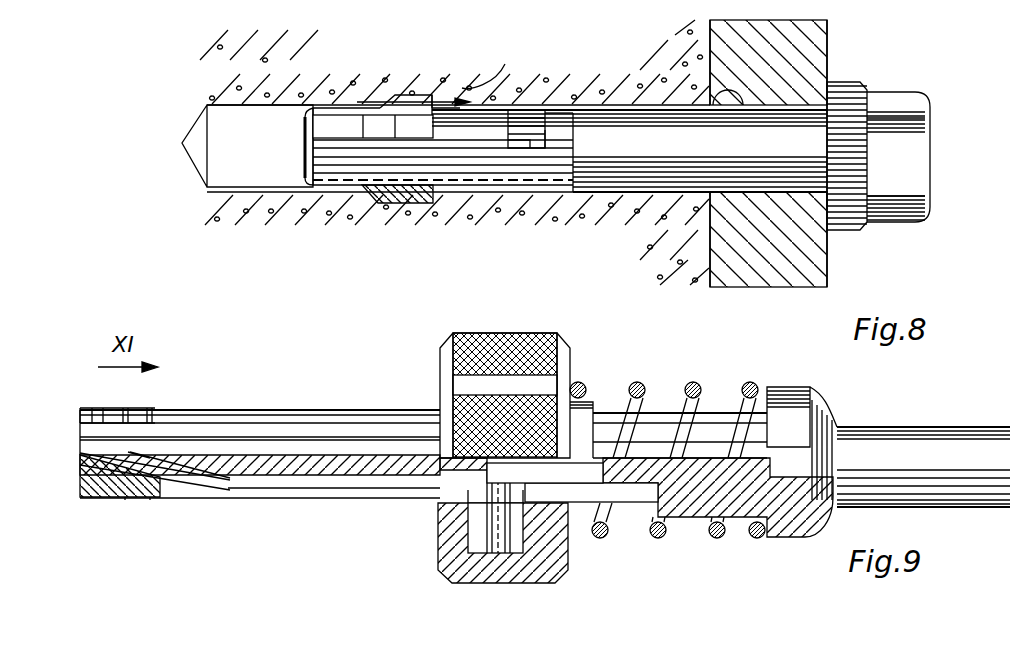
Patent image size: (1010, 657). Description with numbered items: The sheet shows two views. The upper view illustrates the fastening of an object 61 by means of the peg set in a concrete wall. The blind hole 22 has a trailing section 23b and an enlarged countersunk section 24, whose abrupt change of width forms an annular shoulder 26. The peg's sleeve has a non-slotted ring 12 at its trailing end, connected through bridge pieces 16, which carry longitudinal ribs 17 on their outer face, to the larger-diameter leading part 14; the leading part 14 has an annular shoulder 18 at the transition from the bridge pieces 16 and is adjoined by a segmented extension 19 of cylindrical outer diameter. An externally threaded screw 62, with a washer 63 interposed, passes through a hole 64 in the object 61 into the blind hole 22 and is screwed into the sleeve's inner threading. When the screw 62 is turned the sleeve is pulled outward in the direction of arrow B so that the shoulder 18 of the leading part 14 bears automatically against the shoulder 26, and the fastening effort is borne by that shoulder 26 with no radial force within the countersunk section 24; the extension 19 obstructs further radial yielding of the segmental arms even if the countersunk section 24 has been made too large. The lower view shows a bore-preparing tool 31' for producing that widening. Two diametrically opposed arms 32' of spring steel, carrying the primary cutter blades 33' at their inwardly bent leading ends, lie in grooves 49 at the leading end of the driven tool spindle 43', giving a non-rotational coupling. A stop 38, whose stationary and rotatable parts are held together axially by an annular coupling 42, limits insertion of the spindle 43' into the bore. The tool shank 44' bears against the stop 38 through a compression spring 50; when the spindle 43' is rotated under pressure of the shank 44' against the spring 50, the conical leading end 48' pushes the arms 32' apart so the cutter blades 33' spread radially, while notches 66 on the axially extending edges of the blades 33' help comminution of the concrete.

In FIG. 8, the trailing section 23b is at (245, 110).
In FIG. 8, the segmented extension 19 is at (328, 118).
In FIG. 8, the leading part 14 is at (406, 97).
In FIG. 8, the annular shoulder 26 is at (436, 100).
In FIG. 8, the annular shoulder 18 is at (460, 100).
In FIG. 8, the direction arrow B is at (488, 64).
In FIG. 8, the ring 12 is at (528, 108).
In FIG. 8, the hole 64 is at (710, 93).
In FIG. 8, the object 61 is at (805, 57).
In FIG. 8, the countersunk section 24 is at (405, 205).
In FIG. 8, the bridge pieces 16 is at (490, 130).
In FIG. 8, the longitudinal ribs 17 is at (545, 135).
In FIG. 8, the blind hole 22 is at (582, 195).
In FIG. 8, the threaded screw 62 is at (642, 160).
In FIG. 8, the washer 63 is at (848, 215).
In FIG. 9, the stop 38 is at (496, 336).
In FIG. 9, the tool 31' is at (458, 415).
In FIG. 9, the grooves 49 is at (135, 455).
In FIG. 9, the tool shank 44' is at (923, 446).
In FIG. 9, the primary cutter blades 33' is at (120, 492).
In FIG. 9, the notches 66 is at (150, 497).
In FIG. 9, the conical leading end 48' is at (180, 496).
In FIG. 9, the arms 32' is at (283, 503).
In FIG. 9, the annular coupling 42 is at (445, 541).
In FIG. 9, the driven tool spindle 43' is at (572, 512).
In FIG. 9, the compression spring 50 is at (720, 536).